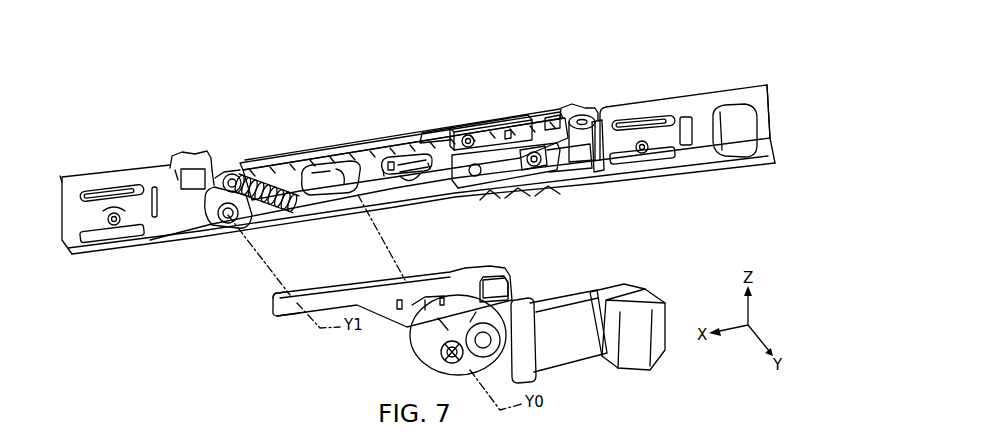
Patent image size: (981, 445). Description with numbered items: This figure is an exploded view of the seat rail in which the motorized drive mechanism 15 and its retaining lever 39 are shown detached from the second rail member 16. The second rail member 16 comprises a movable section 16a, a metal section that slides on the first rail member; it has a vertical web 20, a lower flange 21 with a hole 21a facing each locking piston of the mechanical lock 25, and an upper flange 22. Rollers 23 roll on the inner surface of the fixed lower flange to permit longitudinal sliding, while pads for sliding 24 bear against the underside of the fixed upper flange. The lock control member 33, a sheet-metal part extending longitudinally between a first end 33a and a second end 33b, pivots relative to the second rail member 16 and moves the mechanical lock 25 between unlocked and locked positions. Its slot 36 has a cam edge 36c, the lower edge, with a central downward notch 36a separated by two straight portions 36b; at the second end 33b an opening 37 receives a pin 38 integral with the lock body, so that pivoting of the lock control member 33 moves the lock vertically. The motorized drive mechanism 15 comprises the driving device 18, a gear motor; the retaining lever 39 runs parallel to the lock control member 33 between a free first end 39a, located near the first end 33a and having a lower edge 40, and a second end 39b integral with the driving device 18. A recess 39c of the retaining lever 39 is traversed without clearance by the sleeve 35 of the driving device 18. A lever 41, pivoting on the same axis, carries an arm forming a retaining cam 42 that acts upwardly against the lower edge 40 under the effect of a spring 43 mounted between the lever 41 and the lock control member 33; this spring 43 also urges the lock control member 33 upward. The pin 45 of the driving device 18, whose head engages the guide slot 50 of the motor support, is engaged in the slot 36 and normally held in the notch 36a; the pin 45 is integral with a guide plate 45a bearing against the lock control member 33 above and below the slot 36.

The motorized drive mechanism 15 is at (586, 372).
The second rail member 16 is at (770, 91).
The movable section 16a is at (771, 122).
The driving device 18 is at (560, 356).
The vertical web 20 is at (62, 217).
The lower flange 21 is at (772, 152).
The hole 21a is at (548, 195).
The upper flange 22 is at (60, 178).
The rollers 23 is at (112, 231).
The pads for sliding 24 is at (182, 156).
The mechanical lock 25 is at (490, 128).
The lock control member 33 is at (290, 165).
The first end 33a is at (242, 212).
The second end 33b is at (540, 172).
The sleeve 35 is at (430, 298).
The slot 36 is at (422, 157).
The notch 36a is at (410, 182).
The straight portions 36b is at (388, 178).
The cam edge 36c is at (390, 162).
The opening 37 is at (533, 150).
The pin 38 is at (600, 172).
The retaining lever 39 is at (340, 286).
The first end 39a is at (272, 305).
The second end 39b is at (486, 278).
The recess 39c is at (418, 292).
The lower edge 40 is at (286, 318).
The lever 41 is at (227, 173).
The retaining cam 42 is at (220, 206).
The spring 43 is at (262, 185).
The pin 45 is at (514, 290).
The guide plate 45a is at (500, 275).
The guide slot 50 is at (404, 164).